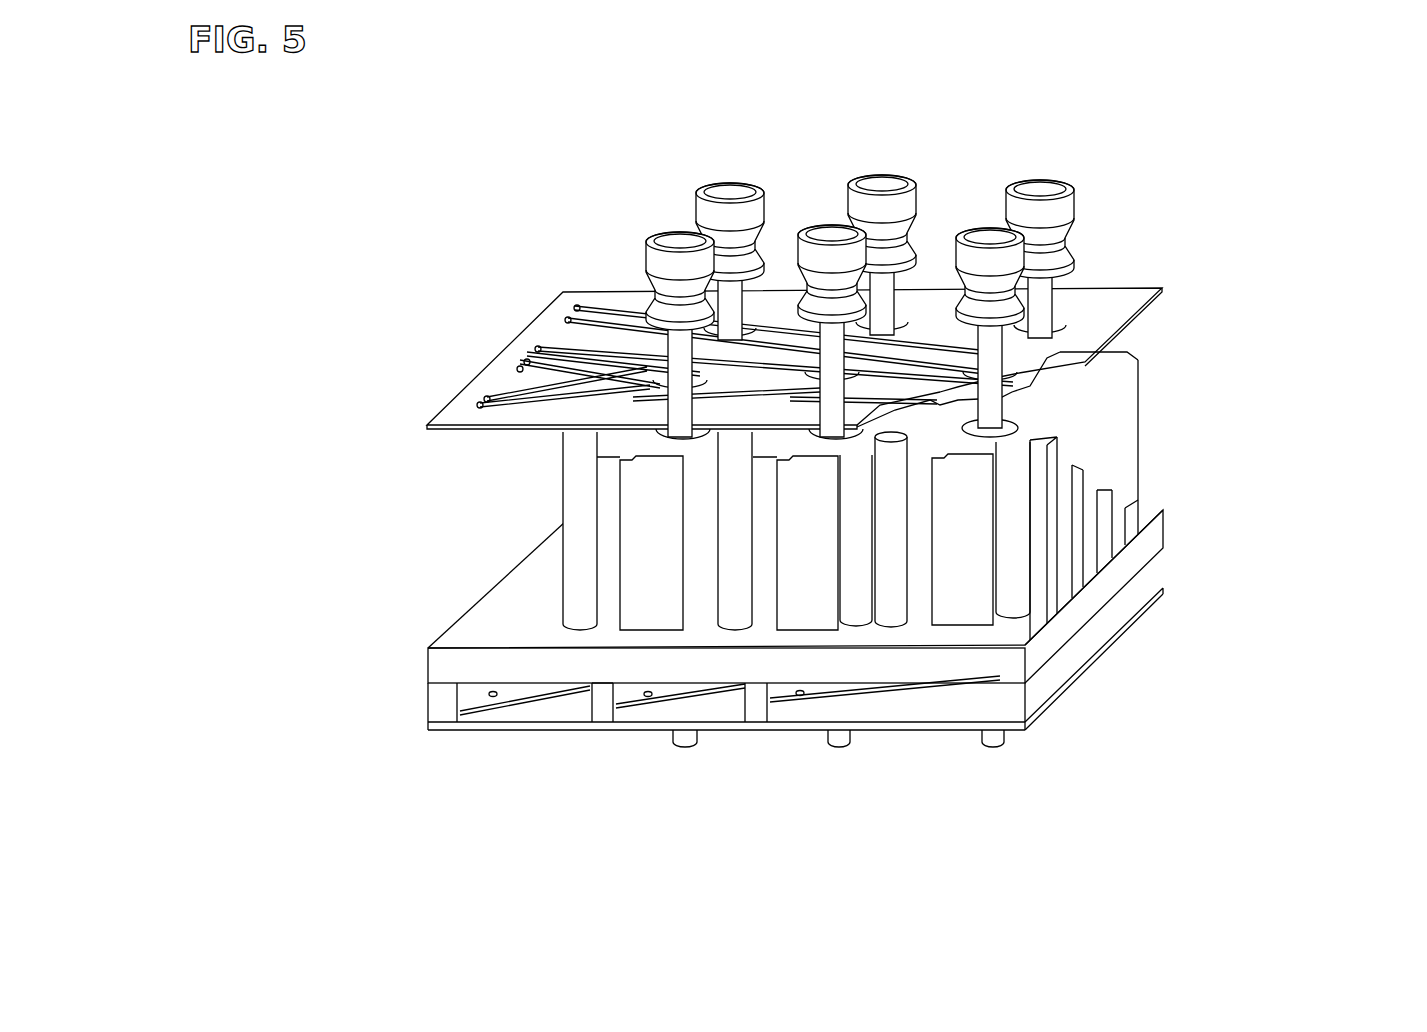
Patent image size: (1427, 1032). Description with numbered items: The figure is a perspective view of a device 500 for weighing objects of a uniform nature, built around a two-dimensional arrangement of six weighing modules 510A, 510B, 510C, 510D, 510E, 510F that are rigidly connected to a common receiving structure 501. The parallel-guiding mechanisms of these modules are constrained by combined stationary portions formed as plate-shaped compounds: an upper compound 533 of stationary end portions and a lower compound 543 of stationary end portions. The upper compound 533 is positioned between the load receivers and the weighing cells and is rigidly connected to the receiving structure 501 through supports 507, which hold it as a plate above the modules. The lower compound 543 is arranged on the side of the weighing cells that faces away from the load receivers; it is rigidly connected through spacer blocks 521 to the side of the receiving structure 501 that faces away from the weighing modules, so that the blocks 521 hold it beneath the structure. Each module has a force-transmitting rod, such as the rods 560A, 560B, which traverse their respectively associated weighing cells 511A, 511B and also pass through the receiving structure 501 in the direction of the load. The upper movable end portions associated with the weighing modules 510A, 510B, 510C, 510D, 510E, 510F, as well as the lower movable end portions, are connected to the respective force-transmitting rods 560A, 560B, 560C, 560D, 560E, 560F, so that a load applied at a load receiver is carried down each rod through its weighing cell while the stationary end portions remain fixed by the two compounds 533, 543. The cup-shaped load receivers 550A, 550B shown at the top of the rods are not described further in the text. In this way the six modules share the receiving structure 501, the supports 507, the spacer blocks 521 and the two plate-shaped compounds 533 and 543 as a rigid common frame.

The device for weighing objects of a uniform nature 500 is at (437, 257).
The receiving structure 501 is at (517, 613).
The supports 507 is at (887, 543).
The weighing module 510A is at (963, 553).
The weighing module 510B is at (806, 573).
The weighing module 510C is at (656, 557).
The weighing module 510D is at (1159, 263).
The weighing module 510E is at (847, 475).
The weighing module 510F is at (582, 268).
The weighing cell 511A is at (1010, 538).
The weighing cell 511B is at (827, 575).
The spacer blocks 521 is at (600, 703).
The upper compound of stationary end portions 533 is at (475, 416).
The lower compound of stationary end portions 543 is at (523, 713).
The spool cup A 550A is at (988, 263).
The spool cup B 550B is at (835, 265).
The force-transmitting rod 560A is at (993, 348).
The force-transmitting rod 560B is at (837, 353).
The force-transmitting rod 560C is at (680, 358).
The force-transmitting rod 560D is at (1040, 297).
The force-transmitting rod 560E is at (880, 298).
The force-transmitting rod 560F is at (730, 302).